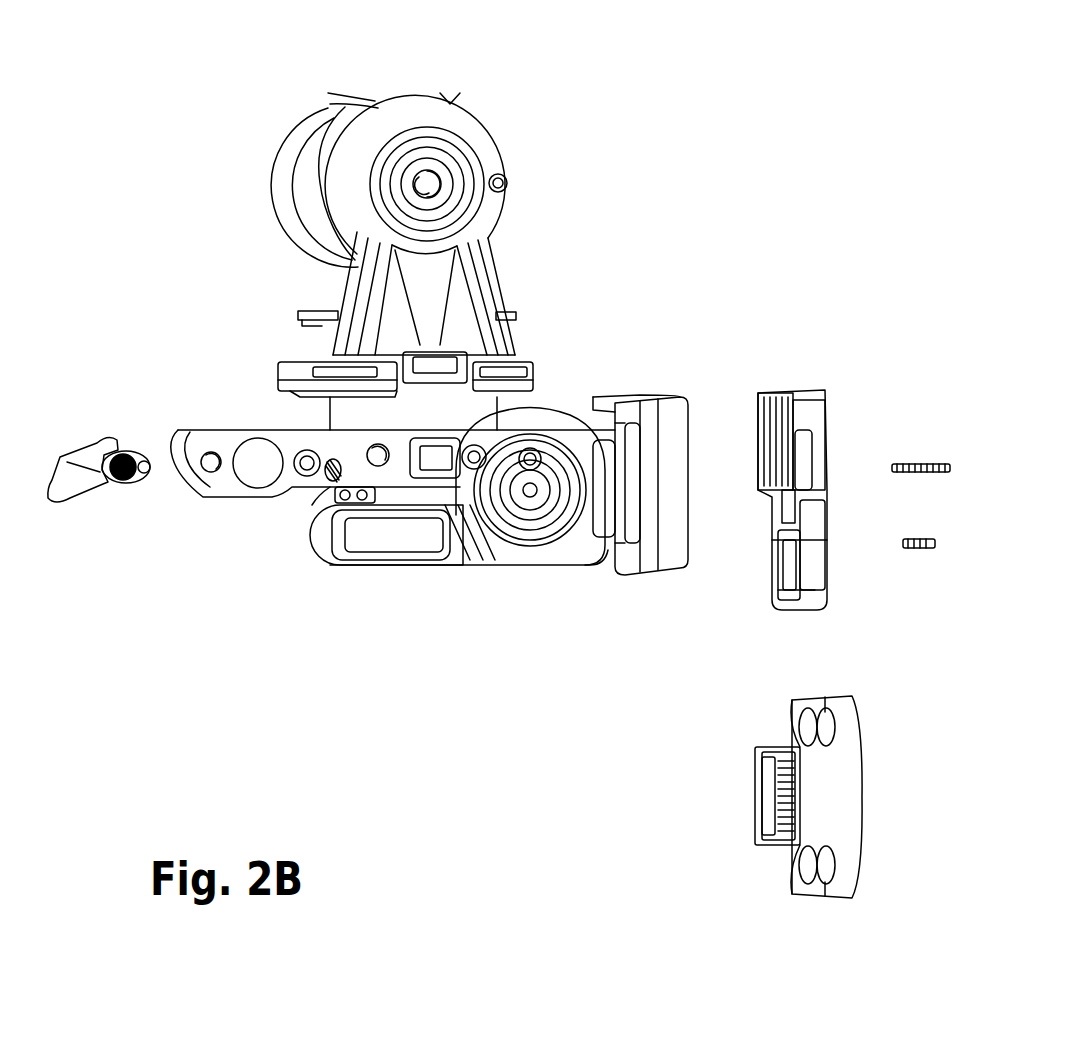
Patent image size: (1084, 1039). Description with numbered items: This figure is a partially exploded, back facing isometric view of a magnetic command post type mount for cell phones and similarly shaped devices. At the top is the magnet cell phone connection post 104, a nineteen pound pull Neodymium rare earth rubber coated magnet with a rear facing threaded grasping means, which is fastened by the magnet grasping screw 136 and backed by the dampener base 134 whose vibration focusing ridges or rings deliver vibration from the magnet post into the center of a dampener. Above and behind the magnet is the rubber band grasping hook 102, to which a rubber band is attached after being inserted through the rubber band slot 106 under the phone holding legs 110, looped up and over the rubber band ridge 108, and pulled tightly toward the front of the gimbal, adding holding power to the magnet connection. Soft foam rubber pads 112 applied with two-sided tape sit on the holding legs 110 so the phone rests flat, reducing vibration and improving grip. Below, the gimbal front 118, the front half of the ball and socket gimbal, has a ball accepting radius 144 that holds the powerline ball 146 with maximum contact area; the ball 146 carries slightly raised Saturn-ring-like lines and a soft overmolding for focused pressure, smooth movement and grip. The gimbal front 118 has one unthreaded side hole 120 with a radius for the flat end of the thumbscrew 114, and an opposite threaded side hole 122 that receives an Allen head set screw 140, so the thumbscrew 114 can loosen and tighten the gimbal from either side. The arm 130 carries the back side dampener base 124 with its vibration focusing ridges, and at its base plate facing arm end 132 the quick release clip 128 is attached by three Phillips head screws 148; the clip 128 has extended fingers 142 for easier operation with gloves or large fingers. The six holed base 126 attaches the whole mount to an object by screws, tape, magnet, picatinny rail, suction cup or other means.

The rubber band grasping hook 102 is at (433, 92).
The magnet cell phone connection post 104 is at (330, 104).
The rubber band slot 106 is at (400, 364).
The rubber band ridge 108 is at (417, 373).
The phone holding legs 110 is at (292, 376).
The soft foam rubber pads 112 is at (302, 311).
The thumbscrew 114 is at (92, 470).
The gimbal front 118 is at (185, 435).
The side hole 120 is at (378, 458).
The side hole 122 is at (295, 466).
The back side dampener base 124 is at (530, 492).
The base 126 is at (842, 866).
The quick release clip 128 is at (822, 392).
The arm 130 is at (455, 570).
The base plate facing arm end 132 is at (690, 397).
The back of magnet dampener base 134 is at (453, 170).
The magnet grasping screw 136 is at (510, 186).
The Allen head set screw 140 is at (552, 480).
The extended fingers 142 is at (810, 596).
The ball accepting radius 144 is at (342, 478).
The powerline ball 146 is at (257, 462).
The Phillips head screws 148 is at (958, 462).